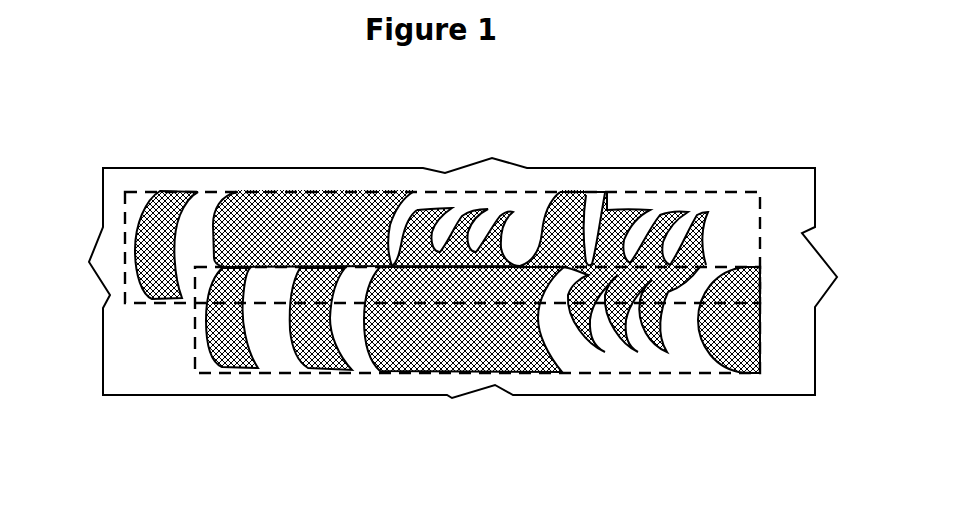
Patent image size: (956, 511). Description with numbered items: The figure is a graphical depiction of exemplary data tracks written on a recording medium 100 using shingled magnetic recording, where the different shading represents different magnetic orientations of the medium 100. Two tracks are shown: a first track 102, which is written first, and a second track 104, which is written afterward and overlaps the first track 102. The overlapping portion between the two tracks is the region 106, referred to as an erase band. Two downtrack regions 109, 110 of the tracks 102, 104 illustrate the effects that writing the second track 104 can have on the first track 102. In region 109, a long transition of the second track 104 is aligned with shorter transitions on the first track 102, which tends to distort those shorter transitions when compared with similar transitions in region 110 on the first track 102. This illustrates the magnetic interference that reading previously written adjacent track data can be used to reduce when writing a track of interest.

The recording medium 100 is at (118, 375).
The first track 102 is at (133, 212).
The second track 104 is at (204, 358).
The erase band 106 is at (690, 283).
The downtrack region 109 is at (577, 148).
The downtrack region 110 is at (745, 148).